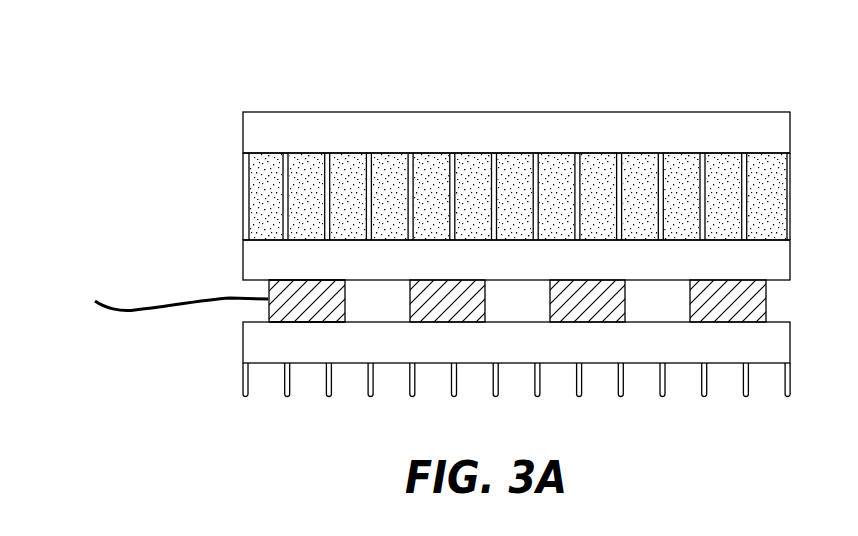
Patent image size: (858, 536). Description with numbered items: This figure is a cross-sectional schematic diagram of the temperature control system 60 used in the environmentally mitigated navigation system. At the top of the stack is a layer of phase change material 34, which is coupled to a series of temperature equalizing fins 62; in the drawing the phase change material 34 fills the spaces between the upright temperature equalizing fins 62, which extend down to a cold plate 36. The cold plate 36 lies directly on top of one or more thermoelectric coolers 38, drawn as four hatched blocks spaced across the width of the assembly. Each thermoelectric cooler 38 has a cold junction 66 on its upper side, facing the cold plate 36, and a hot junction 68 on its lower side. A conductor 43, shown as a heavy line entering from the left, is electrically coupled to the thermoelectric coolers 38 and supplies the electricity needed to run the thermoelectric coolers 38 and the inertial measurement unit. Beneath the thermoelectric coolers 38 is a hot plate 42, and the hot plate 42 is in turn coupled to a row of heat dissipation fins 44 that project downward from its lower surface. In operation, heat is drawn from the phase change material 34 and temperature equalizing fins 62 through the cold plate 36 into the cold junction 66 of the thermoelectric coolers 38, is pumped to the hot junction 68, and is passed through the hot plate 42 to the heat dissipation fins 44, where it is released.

The temperature control system 60 is at (580, 67).
The phase change material 34 is at (393, 172).
The temperature equalizing fins 62 is at (327, 196).
The cold plate 36 is at (252, 257).
The thermoelectric coolers 38 is at (776, 296).
The cold junction 66 is at (268, 287).
The hot junction 68 is at (267, 313).
The conductor 43 is at (168, 305).
The hot plate 42 is at (247, 343).
The heat dissipation fins 44 is at (242, 382).